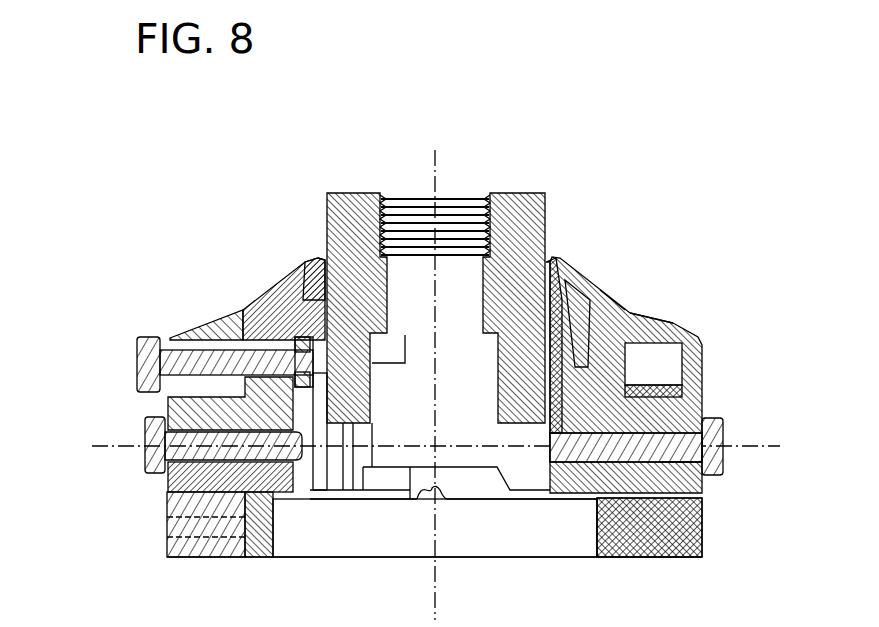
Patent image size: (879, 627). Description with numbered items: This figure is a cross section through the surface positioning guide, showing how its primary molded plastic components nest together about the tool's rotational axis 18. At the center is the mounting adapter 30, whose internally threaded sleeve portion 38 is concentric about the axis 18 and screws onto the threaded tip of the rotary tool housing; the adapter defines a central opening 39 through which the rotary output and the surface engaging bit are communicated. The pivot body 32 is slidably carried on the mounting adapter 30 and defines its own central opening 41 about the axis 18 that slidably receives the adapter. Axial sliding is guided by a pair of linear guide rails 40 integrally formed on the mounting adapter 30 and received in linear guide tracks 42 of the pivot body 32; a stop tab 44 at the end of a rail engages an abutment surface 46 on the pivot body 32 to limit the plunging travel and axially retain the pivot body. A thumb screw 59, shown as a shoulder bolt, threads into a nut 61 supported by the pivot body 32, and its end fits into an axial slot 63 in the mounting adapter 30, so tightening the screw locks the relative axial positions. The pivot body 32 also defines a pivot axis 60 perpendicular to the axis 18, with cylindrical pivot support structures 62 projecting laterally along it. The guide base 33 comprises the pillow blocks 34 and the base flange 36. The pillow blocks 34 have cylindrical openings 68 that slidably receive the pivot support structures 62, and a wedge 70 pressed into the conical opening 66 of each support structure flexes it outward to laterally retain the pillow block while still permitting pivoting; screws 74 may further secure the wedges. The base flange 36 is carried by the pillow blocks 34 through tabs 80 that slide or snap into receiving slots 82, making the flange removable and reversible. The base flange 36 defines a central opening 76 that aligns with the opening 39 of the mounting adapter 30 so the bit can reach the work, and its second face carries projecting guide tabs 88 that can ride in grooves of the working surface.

The mounting adapter 30 is at (345, 190).
The rotational axis 18 is at (441, 588).
The internally threaded sleeve portion 38 is at (511, 193).
The central opening 39 is at (406, 210).
The central opening 41 is at (465, 390).
The guide tabs 88 is at (418, 498).
The linear guide rails 40 is at (541, 256).
The pivot body 32 is at (598, 277).
The cylindrical openings 68 is at (703, 376).
The conical openings 66 is at (703, 400).
The linear guide tracks 42 is at (561, 360).
The abutment surface 46 is at (576, 367).
The stop tab 44 is at (598, 290).
The pillow blocks 34 is at (640, 313).
The screws 74 is at (718, 462).
The wedge 70 is at (690, 473).
The base flange 36 is at (607, 540).
The guide base 33 is at (700, 530).
The central opening 76 is at (297, 540).
The thumb screw 59 is at (152, 363).
The pivot axis 60 is at (103, 445).
The nut 61 is at (270, 290).
The axial slot 63 is at (304, 280).
The pivot support structures 62 is at (167, 487).
The receiving slots 82 is at (167, 500).
The tabs 80 is at (167, 528).